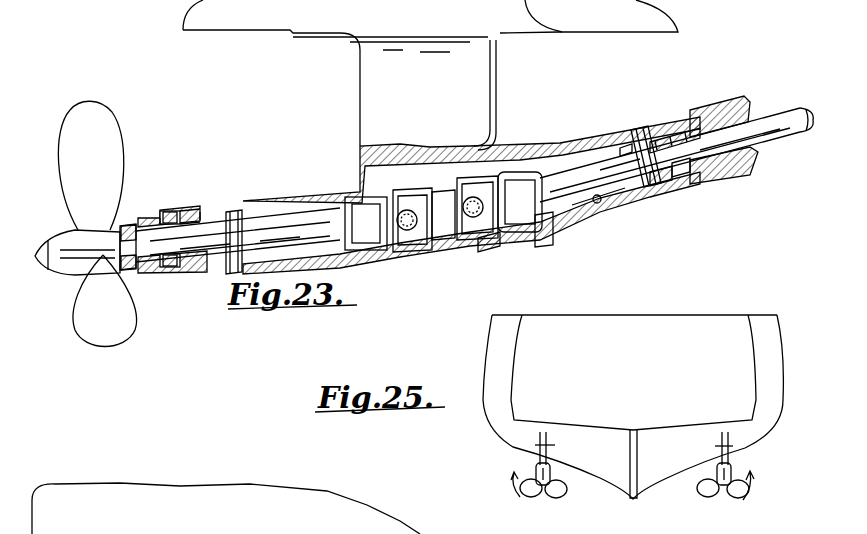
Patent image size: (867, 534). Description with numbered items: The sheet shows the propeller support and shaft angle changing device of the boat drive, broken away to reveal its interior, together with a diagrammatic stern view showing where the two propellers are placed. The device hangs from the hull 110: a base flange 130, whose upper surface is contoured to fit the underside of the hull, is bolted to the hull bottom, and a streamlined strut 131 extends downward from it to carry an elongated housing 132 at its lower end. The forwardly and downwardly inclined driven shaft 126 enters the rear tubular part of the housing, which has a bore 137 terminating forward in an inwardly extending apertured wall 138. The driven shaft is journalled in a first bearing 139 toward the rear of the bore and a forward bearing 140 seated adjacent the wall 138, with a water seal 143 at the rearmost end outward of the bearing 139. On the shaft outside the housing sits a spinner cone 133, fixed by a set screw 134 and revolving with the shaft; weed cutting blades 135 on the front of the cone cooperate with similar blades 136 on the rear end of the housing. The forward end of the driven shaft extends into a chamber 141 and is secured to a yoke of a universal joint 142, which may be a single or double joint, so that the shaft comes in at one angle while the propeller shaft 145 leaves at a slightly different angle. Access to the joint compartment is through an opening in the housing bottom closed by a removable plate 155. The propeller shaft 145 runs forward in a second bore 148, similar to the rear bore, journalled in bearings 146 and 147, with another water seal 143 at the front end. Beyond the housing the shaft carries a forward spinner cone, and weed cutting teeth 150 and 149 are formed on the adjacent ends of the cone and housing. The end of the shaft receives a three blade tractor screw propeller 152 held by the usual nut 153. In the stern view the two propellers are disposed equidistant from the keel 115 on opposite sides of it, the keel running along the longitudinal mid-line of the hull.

In FIG. 23, the hull 110 is at (222, 28).
In FIG. 25, the hull 110 is at (498, 418).
In FIG. 25, the keel 115 is at (640, 500).
In FIG. 23, the driven shaft 126 is at (788, 108).
In FIG. 25, the driven shaft 126 is at (551, 455).
In FIG. 23, the base flange 130 is at (338, 40).
In FIG. 25, the base flange 130 is at (550, 444).
In FIG. 23, the strut 131 is at (373, 86).
In FIG. 23, the elongated housing 132 is at (315, 190).
In FIG. 25, the elongated housing 132 is at (543, 497).
In FIG. 23, the spinner cone 133 is at (683, 117).
In FIG. 23, the set screw 134 is at (710, 112).
In FIG. 23, the weed cutting blades 135 is at (683, 185).
In FIG. 23, the weed cutting blades 136 is at (677, 193).
In FIG. 23, the bore 137 is at (600, 203).
In FIG. 23, the apertured wall 138 is at (543, 230).
In FIG. 23, the first bearing 139 is at (633, 142).
In FIG. 23, the forward bearing 140 is at (534, 168).
In FIG. 23, the chamber 141 is at (463, 243).
In FIG. 23, the universal joint 142 is at (446, 237).
In FIG. 23, the water seal 143 is at (222, 272).
In FIG. 23, the propeller shaft 145 is at (300, 218).
In FIG. 23, the bearing 146 is at (183, 273).
In FIG. 23, the bearing 147 is at (165, 215).
In FIG. 23, the bore 148 is at (262, 212).
In FIG. 23, the weed cutting teeth 149 is at (207, 213).
In FIG. 23, the weed cutting teeth 150 is at (183, 210).
In FIG. 23, the three blade tractor screw propeller 152 is at (100, 333).
In FIG. 25, the three blade tractor screw propeller 152 is at (556, 496).
In FIG. 23, the nut 153 is at (53, 262).
In FIG. 23, the removable plate 155 is at (483, 250).